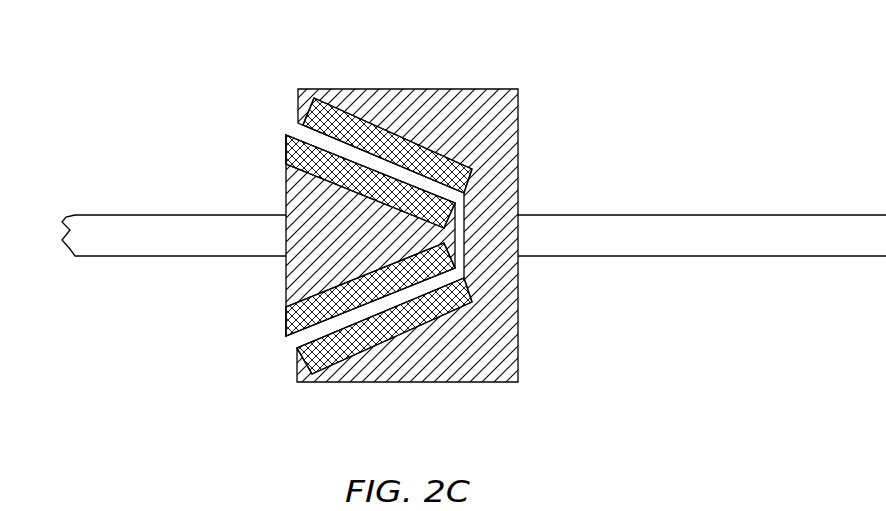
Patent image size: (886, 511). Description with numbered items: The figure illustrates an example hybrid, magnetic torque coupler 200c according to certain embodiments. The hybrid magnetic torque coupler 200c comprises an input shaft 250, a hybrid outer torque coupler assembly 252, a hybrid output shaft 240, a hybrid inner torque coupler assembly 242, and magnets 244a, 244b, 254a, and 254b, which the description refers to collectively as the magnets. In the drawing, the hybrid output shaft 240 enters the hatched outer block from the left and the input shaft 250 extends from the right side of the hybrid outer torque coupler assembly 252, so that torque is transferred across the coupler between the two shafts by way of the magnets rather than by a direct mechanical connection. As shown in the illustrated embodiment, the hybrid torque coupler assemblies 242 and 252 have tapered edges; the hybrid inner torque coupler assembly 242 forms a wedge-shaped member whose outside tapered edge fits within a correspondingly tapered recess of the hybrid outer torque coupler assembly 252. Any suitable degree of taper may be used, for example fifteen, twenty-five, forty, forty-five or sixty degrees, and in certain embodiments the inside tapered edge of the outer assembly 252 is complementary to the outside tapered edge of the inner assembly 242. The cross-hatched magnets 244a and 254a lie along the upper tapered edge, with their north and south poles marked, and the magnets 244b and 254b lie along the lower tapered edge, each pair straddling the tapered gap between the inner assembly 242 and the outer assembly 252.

The hybrid magnetic torque coupler 200c is at (731, 75).
The hybrid output shaft 240 is at (97, 214).
The hybrid inner torque coupler assembly 242 is at (283, 200).
The magnet 244a is at (290, 138).
The magnet 244b is at (283, 320).
The input shaft 250 is at (693, 216).
The hybrid outer torque coupler assembly 252 is at (522, 138).
The magnet 254a is at (362, 117).
The magnet 254b is at (387, 342).